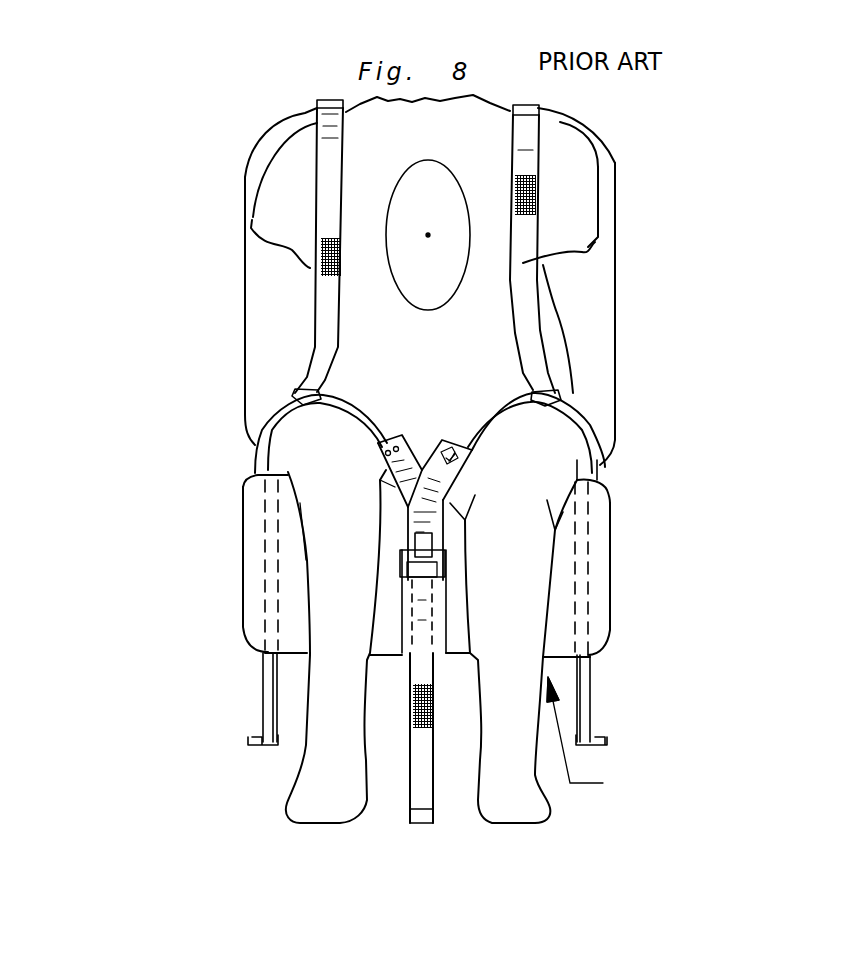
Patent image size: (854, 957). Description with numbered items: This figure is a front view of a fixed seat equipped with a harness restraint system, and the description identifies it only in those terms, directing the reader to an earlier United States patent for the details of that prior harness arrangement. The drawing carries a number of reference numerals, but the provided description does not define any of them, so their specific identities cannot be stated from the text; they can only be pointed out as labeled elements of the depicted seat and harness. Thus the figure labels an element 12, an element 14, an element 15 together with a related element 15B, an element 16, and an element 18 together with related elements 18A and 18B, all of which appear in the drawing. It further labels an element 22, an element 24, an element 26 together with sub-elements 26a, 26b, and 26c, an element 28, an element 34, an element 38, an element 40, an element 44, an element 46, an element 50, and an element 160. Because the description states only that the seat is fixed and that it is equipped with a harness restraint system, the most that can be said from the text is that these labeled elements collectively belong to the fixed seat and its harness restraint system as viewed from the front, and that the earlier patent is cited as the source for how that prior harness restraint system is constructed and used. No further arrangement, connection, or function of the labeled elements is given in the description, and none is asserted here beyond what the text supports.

The child seat 12 is at (630, 268).
The shoulder strap 14 is at (320, 223).
The seat base 15 is at (640, 794).
The seat base portion 15B is at (718, 794).
The seat back 16 is at (600, 175).
The headrest 18 is at (553, 110).
The headrest side wing 18A is at (732, 139).
The headrest side wing 18B is at (820, 139).
The strap anchor ends 22 is at (260, 745).
The crotch strap 24 is at (415, 663).
The harness 26 is at (436, 468).
The left harness arm 26a is at (387, 460).
The right harness arm 26b is at (442, 473).
The harness stem 26c is at (423, 522).
The buckle 28 is at (422, 540).
The buckle tongue 34 is at (473, 443).
The right armrest 38 is at (583, 597).
The left armrest 40 is at (270, 595).
The shoulder strap slots 44 is at (557, 397).
The shoulder pads 46 is at (257, 450).
The buckle housing 50 is at (407, 593).
The head position 160 is at (428, 235).